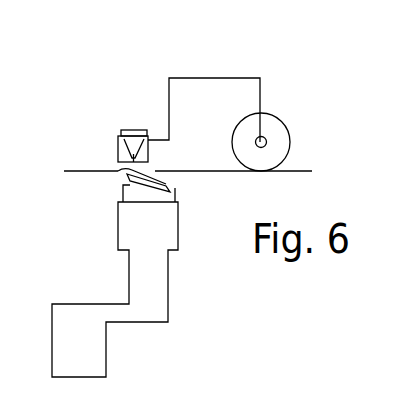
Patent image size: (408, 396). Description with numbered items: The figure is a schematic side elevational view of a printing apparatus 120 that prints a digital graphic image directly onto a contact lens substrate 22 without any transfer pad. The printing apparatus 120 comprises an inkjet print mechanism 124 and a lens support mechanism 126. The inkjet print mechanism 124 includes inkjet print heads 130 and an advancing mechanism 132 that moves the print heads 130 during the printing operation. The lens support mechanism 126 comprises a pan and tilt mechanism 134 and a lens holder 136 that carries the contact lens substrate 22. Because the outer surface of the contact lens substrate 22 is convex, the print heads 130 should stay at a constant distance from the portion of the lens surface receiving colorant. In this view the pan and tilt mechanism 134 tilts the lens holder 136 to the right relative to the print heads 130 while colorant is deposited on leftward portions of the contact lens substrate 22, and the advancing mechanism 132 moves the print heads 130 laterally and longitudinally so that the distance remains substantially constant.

The contact lens substrate 22 is at (118, 172).
The printing apparatus 120 is at (109, 83).
The inkjet print mechanism 124 is at (204, 68).
The lens support mechanism 126 is at (197, 228).
The inkjet print heads 130 is at (118, 149).
The advancing mechanism 132 is at (303, 138).
The pan and tilt mechanism 134 is at (123, 187).
The lens holder 136 is at (172, 185).